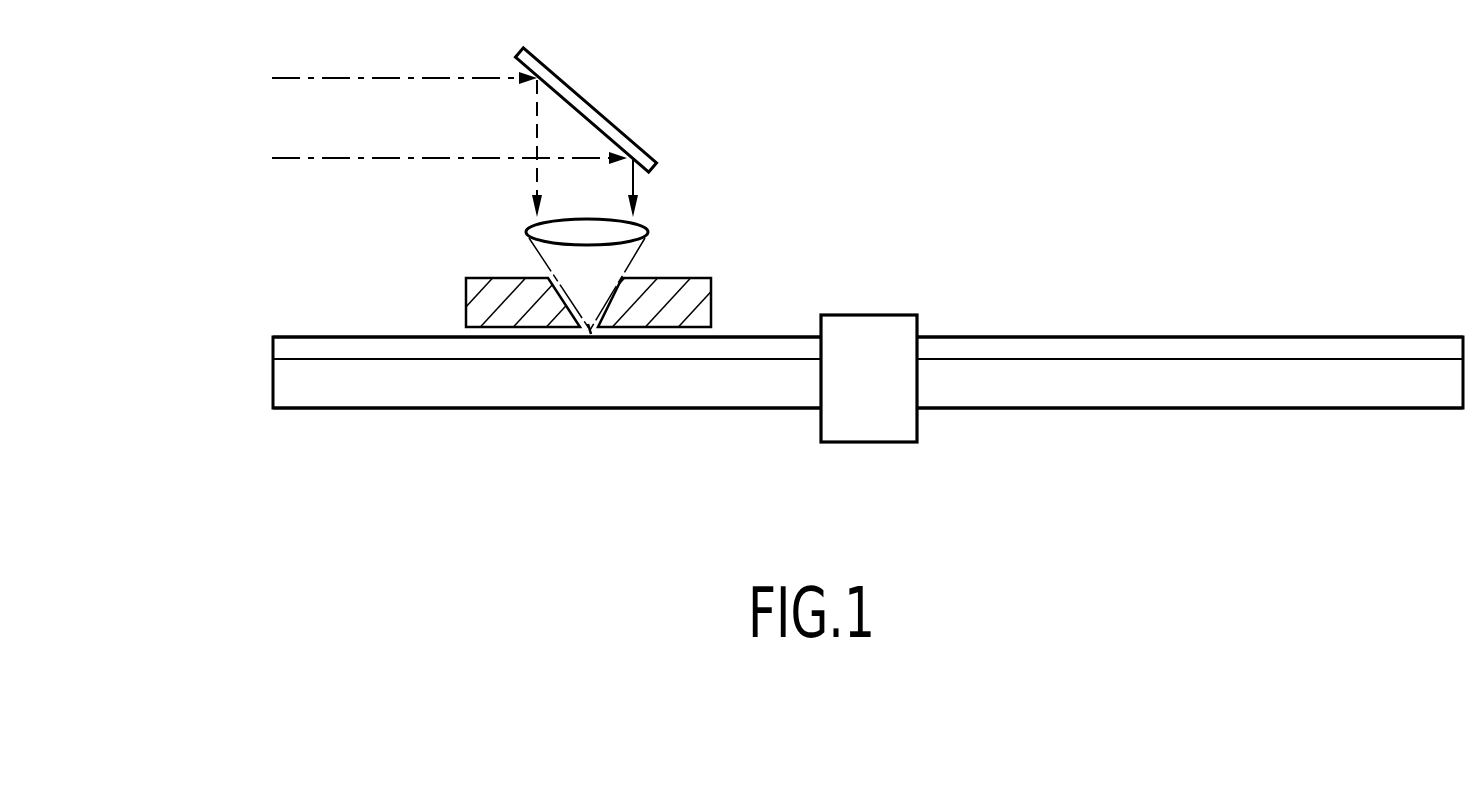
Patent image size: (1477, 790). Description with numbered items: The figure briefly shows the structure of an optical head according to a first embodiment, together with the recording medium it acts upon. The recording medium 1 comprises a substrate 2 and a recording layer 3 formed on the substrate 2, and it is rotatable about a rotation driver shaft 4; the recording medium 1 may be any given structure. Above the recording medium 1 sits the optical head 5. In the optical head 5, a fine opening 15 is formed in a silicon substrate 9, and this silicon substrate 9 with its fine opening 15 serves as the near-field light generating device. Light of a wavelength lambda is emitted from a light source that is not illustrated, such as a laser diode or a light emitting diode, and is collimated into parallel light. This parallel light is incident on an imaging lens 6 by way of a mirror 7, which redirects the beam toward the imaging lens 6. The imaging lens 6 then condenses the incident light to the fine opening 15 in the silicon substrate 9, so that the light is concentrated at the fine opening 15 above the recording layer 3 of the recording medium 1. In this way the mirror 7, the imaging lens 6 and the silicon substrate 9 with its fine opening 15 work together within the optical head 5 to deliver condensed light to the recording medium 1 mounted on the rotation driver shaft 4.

The recording medium 1 is at (515, 422).
The substrate 2 is at (285, 385).
The recording layer 3 is at (290, 348).
The rotation driver shaft 4 is at (868, 324).
The optical head 5 is at (745, 260).
The imaging lens 6 is at (640, 232).
The mirror 7 is at (593, 118).
The silicon substrate 9 is at (711, 313).
The fine opening 15 is at (587, 328).